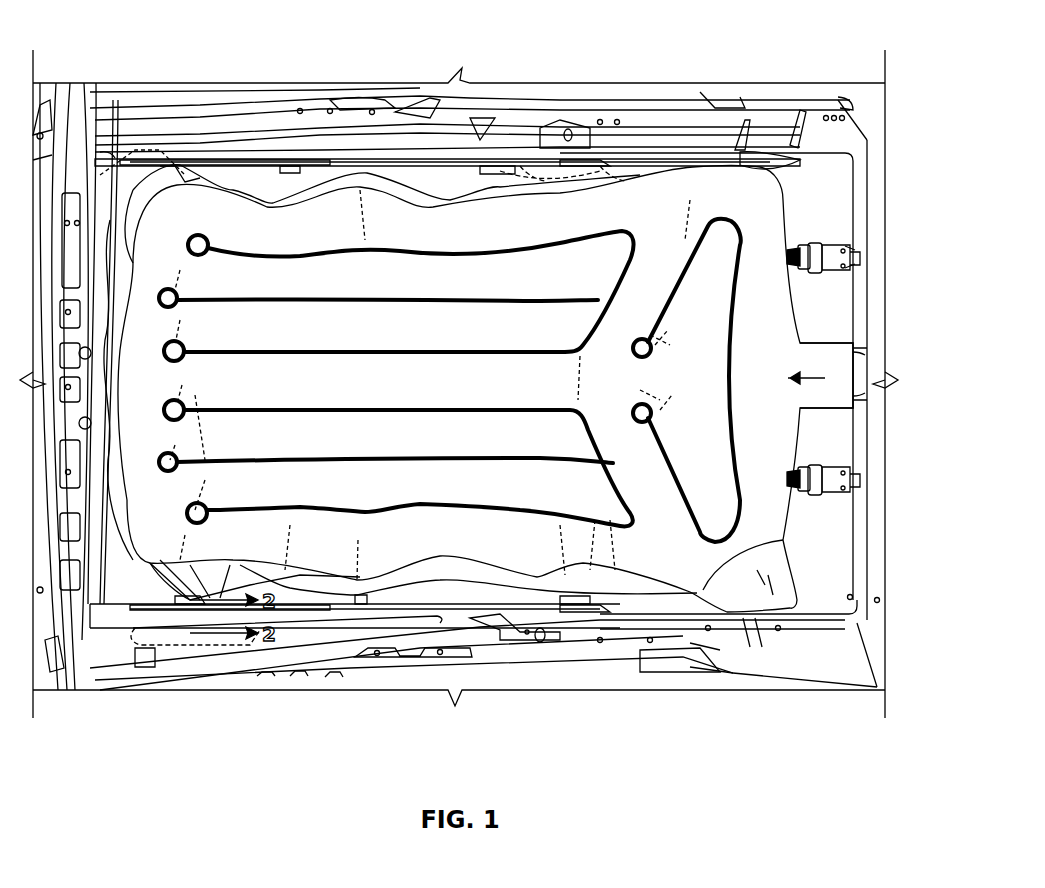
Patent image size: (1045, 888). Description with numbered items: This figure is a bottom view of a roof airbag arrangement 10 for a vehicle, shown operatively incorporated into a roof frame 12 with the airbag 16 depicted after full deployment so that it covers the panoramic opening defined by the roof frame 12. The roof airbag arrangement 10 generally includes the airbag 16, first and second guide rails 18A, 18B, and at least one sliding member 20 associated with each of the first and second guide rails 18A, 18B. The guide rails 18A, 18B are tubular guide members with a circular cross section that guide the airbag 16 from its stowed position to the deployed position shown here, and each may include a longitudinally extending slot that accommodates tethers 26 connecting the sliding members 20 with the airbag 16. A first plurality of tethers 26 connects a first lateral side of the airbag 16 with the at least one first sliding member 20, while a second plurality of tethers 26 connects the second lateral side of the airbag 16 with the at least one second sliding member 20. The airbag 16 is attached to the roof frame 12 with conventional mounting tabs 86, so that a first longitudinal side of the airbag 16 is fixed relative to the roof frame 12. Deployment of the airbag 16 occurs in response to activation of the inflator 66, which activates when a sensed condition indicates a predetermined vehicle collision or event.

The roof airbag arrangement 10 is at (810, 77).
The roof frame 12 is at (610, 90).
The airbag 16 is at (220, 218).
The first guide rail 18A is at (407, 160).
The second guide rail 18B is at (477, 608).
The sliding member 20 is at (115, 152).
The tethers 26 is at (200, 177).
The inflator 66 is at (843, 343).
The mounting tabs 86 is at (830, 243).